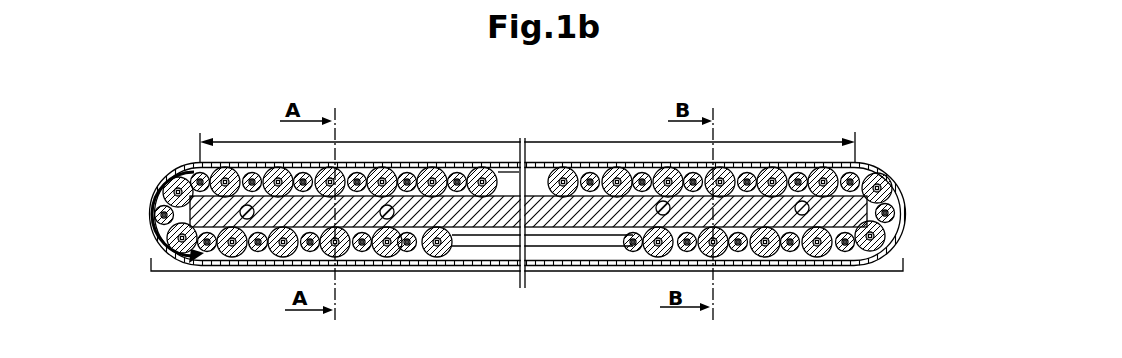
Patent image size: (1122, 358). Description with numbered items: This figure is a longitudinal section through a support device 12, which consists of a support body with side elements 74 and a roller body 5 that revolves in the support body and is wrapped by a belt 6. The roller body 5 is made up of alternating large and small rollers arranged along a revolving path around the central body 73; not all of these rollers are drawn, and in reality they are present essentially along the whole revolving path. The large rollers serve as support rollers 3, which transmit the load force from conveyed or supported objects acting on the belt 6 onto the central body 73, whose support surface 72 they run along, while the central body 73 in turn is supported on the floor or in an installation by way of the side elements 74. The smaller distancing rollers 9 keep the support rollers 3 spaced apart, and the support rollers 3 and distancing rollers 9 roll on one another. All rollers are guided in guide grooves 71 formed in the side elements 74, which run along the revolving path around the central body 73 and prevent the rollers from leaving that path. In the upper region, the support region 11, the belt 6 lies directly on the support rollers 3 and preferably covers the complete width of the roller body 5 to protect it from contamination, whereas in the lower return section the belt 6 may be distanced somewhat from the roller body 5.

The support device 12 is at (187, 97).
The support region 11 is at (432, 142).
The belt 6 is at (885, 162).
The roller body 5 is at (178, 264).
The support rollers 3 is at (232, 256).
The distancing rollers 9 is at (258, 252).
The guide grooves 71 is at (536, 178).
The support surface 72 is at (511, 186).
The central body 73 is at (485, 218).
The side elements 74 is at (555, 252).